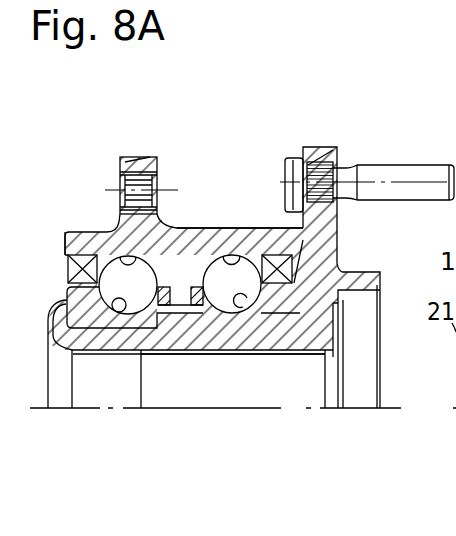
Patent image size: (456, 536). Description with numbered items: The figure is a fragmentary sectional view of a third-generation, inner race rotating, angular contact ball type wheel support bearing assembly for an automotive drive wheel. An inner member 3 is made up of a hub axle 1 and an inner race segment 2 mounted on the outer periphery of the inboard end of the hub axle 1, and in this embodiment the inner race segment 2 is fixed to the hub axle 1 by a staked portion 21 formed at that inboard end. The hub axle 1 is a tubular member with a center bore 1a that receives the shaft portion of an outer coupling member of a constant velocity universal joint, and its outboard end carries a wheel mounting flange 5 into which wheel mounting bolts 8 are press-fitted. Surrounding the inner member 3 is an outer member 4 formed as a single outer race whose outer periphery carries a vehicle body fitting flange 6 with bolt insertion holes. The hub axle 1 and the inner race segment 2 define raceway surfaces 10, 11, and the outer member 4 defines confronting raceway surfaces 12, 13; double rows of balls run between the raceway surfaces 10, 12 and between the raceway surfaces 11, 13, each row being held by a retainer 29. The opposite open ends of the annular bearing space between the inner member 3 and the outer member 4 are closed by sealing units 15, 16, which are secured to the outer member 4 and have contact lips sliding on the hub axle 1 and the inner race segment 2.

The hub axle 1 is at (222, 337).
The center bore 1a is at (290, 382).
The inner race segment 2 is at (136, 318).
The inner member 3 is at (213, 458).
The outer member 4 is at (217, 240).
The wheel mounting flange 5 is at (322, 150).
The vehicle body fitting flange 6 is at (140, 165).
The wheel mounting bolts 8 is at (405, 176).
The raceway surface 10 is at (242, 298).
The raceway surface 11 is at (118, 322).
The raceway surface 12 is at (232, 250).
The raceway surface 13 is at (115, 262).
The sealing unit 15 is at (70, 268).
The sealing unit 16 is at (294, 276).
The staked portion 21 is at (57, 304).
The retainer 29 is at (198, 290).